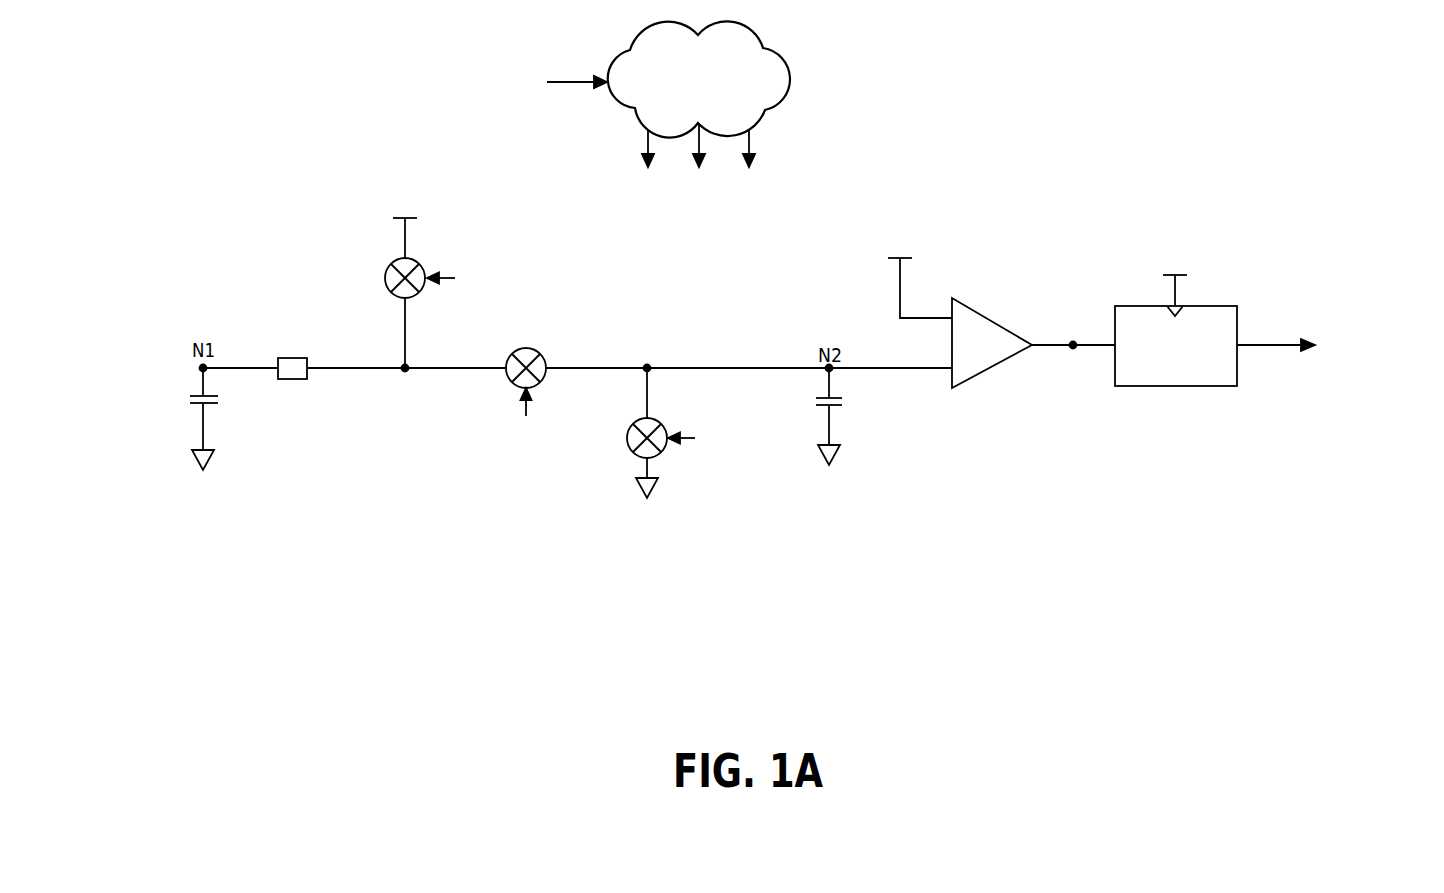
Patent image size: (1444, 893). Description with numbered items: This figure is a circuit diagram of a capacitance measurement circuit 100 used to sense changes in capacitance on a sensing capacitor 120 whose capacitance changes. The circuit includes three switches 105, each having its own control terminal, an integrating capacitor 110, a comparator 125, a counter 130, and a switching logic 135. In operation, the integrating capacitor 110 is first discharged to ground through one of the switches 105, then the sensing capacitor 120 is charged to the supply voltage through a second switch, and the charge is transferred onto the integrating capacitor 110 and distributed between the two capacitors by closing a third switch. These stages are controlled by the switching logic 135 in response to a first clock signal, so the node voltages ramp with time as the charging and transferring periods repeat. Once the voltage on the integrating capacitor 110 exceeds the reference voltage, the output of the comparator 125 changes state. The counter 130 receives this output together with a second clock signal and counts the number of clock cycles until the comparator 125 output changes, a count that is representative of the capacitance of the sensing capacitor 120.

The capacitance measurement circuit 100 is at (130, 255).
The switches 105 is at (386, 282).
The integrating capacitor 110 is at (810, 404).
The sensing capacitor 120 is at (213, 404).
The comparator 125 is at (1003, 368).
The counter 130 is at (1208, 386).
The switching logic 135 is at (752, 111).